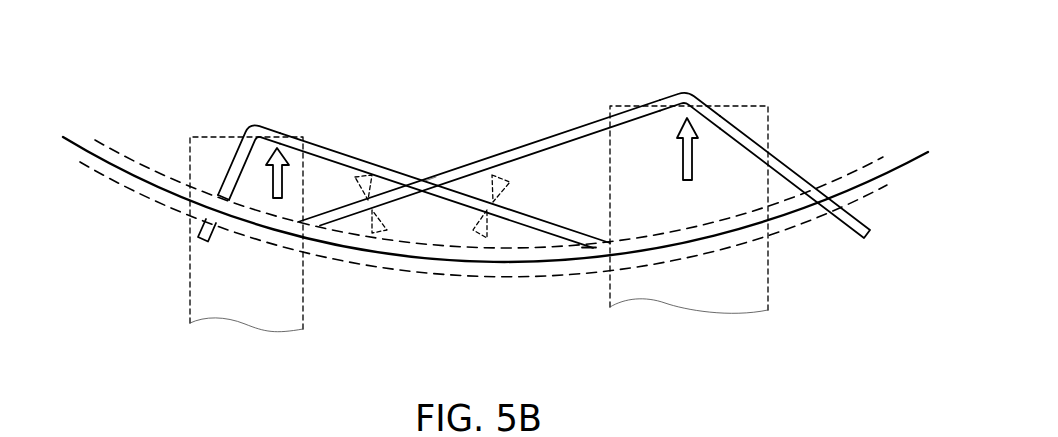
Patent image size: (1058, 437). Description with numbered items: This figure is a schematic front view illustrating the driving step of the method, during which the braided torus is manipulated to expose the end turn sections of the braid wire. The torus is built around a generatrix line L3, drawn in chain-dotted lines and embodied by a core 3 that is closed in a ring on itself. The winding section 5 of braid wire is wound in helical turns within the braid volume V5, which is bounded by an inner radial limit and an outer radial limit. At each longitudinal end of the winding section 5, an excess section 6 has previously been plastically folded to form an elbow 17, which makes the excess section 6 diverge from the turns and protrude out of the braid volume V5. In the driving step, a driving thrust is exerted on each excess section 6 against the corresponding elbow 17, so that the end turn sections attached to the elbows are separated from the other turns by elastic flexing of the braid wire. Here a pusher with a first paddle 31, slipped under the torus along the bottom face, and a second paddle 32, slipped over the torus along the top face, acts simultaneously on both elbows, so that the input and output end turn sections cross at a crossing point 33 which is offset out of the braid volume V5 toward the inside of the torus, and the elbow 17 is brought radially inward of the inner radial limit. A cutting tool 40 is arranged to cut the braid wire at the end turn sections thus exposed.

The core 3 is at (64, 136).
The generatrix line L3 is at (495, 199).
The winding section 5 is at (110, 139).
The excess section 6 is at (541, 224).
The elbow 17 is at (485, 104).
The first paddle 31 is at (247, 308).
The second paddle 32 is at (708, 295).
The crossing point 33 is at (432, 176).
The cutting tool 40 is at (360, 165).
The braid volume V5 is at (102, 178).